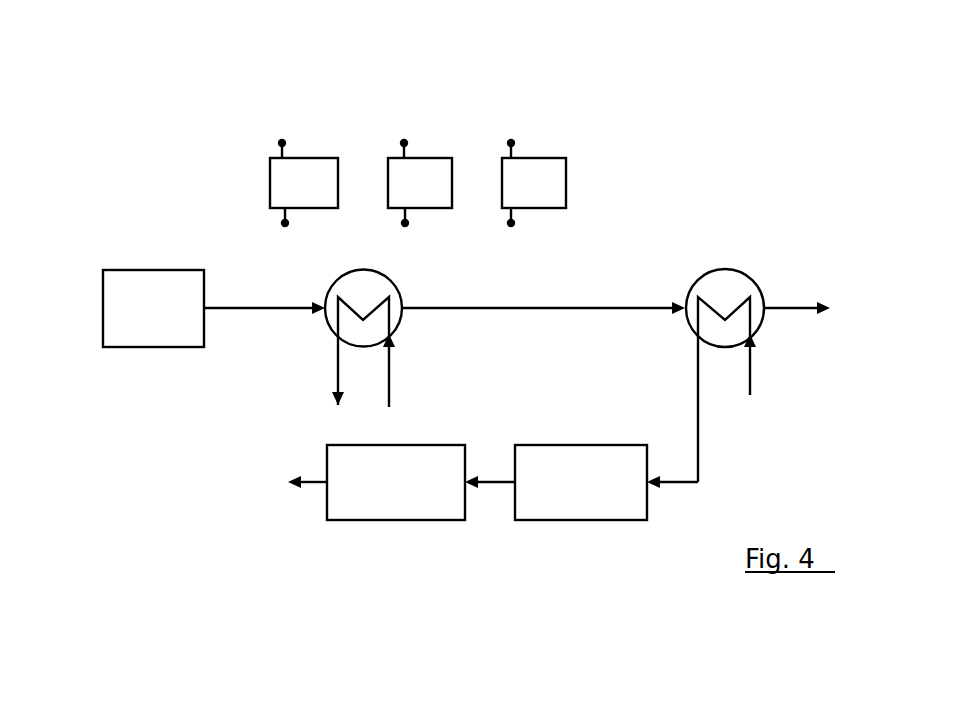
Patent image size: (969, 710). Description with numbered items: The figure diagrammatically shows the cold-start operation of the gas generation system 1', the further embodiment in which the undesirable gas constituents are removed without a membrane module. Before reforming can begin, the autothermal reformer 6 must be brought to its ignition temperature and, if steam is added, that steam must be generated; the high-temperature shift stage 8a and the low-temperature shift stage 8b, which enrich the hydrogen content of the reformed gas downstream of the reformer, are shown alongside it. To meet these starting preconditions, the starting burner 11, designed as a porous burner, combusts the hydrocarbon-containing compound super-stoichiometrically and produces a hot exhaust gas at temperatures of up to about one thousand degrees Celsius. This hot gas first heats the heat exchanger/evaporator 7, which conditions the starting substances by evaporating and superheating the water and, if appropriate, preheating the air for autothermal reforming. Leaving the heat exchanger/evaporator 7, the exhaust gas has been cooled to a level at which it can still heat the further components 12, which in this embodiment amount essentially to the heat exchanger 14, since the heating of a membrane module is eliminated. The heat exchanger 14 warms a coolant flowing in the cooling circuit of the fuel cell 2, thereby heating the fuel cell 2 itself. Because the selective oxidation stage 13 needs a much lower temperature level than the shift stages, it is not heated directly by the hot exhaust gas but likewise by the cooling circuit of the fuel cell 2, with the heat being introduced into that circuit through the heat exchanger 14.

The gas generation system 1' is at (742, 130).
The fuel cell 2 is at (577, 503).
The autothermal reformer 6 is at (279, 175).
The heat exchanger/evaporator 7 is at (345, 333).
The high-temperature shift stage 8a is at (426, 182).
The low-temperature shift stage 8b is at (540, 185).
The starting burner 11 is at (137, 310).
The further components 12 is at (663, 349).
The selective oxidation stage 13 is at (385, 503).
The heat exchanger 14 is at (730, 288).